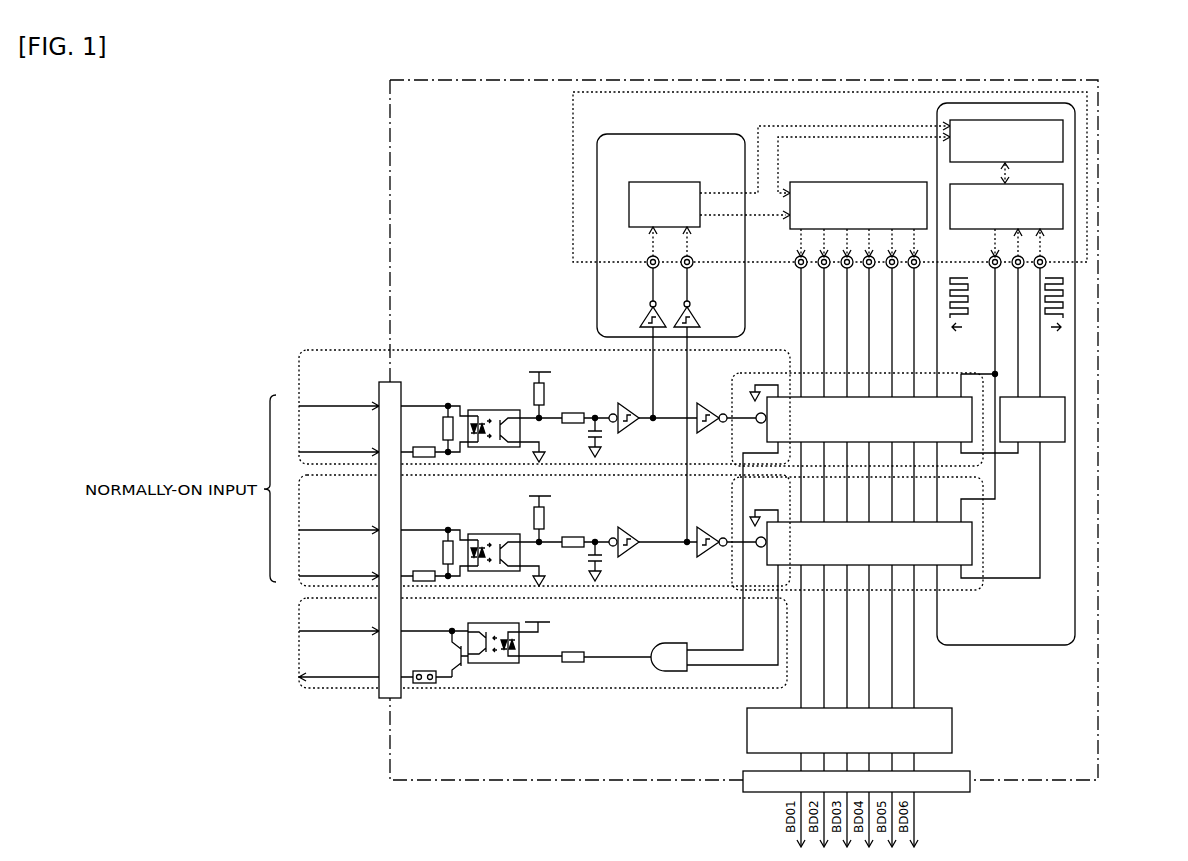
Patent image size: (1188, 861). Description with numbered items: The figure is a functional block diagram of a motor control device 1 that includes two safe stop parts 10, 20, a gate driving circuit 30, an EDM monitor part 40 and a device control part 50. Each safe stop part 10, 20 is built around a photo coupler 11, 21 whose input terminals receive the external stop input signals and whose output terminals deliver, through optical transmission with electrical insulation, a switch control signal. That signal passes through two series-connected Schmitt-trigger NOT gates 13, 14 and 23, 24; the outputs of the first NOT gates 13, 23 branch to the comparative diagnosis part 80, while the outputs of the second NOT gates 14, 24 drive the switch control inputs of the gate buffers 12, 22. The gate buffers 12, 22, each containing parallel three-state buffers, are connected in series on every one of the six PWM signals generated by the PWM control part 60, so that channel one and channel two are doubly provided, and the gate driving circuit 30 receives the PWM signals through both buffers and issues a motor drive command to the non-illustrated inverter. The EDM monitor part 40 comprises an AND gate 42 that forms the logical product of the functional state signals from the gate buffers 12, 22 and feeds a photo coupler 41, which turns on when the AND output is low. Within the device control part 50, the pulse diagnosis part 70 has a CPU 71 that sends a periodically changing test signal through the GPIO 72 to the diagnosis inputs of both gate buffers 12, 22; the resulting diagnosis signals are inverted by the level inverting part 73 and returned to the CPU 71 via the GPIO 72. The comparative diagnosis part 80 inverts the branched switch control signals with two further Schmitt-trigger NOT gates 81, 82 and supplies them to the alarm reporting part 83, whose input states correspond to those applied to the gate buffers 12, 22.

The motor control device 1 is at (391, 181).
The safe stop part 10 is at (297, 368).
The photo coupler 11 is at (496, 410).
The gate buffer 12 is at (792, 373).
The NOT gate 13 is at (628, 403).
The NOT gate 14 is at (700, 404).
The safe stop part 20 is at (296, 586).
The photo coupler 21 is at (492, 570).
The gate buffer 22 is at (975, 546).
The NOT gate 23 is at (630, 529).
The NOT gate 24 is at (712, 550).
The gate driving circuit 30 is at (955, 730).
The EDM monitor part 40 is at (330, 692).
The photo coupler 41 is at (492, 665).
The AND gate 42 is at (672, 673).
The device control part 50 is at (862, 86).
The PWM control part 60 is at (852, 182).
The pulse diagnosis part 70 is at (1078, 548).
The CPU 71 is at (1063, 140).
The GPIO 72 is at (1063, 204).
The level inverting part 73 is at (1065, 420).
The comparative diagnosis part 80 is at (596, 172).
The NOT gate 81 is at (640, 322).
The NOT gate 82 is at (694, 322).
The alarm reporting part 83 is at (629, 210).